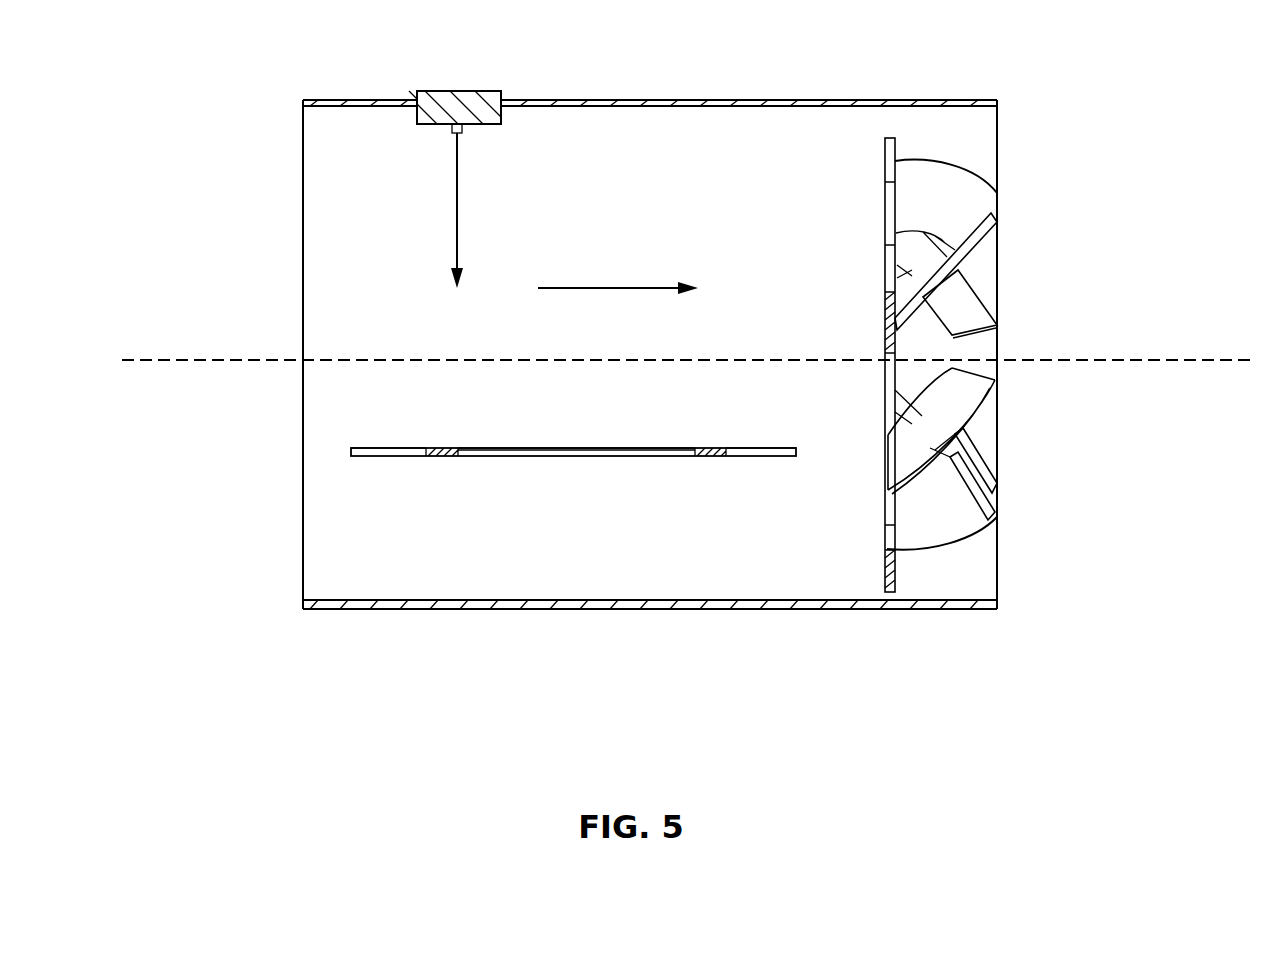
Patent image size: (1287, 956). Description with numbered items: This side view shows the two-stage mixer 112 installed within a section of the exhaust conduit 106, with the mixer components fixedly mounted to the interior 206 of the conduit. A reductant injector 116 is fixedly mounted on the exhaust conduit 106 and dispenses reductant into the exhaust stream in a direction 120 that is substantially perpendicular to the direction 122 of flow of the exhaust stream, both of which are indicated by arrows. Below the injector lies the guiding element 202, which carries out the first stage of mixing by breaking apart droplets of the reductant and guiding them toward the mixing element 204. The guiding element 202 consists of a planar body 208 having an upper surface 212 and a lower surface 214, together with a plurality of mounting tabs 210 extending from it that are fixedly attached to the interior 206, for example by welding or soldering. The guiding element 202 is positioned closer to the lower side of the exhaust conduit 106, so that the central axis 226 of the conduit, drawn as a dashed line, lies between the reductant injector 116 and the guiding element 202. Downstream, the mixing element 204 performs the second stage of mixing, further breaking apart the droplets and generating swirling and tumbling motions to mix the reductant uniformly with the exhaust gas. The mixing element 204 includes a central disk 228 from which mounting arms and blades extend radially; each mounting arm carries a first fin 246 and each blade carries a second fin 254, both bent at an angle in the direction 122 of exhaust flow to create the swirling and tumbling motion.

The two-stage mixer 112 is at (152, 108).
The exhaust conduit 106 is at (761, 100).
The interior 206 is at (373, 600).
The reductant injector 116 is at (460, 92).
The direction 120 is at (456, 224).
The direction of flow of the exhaust stream 122 is at (633, 288).
The central axis 226 is at (160, 362).
The guiding element 202 is at (555, 448).
The planar body 208 is at (655, 448).
The upper surface 212 is at (481, 448).
The mounting tabs 210 is at (451, 458).
The lower surface 214 is at (522, 458).
The mixing element 204 is at (886, 330).
The central disk 228 is at (886, 395).
The first fin 246 is at (997, 194).
The second fin 254 is at (997, 232).